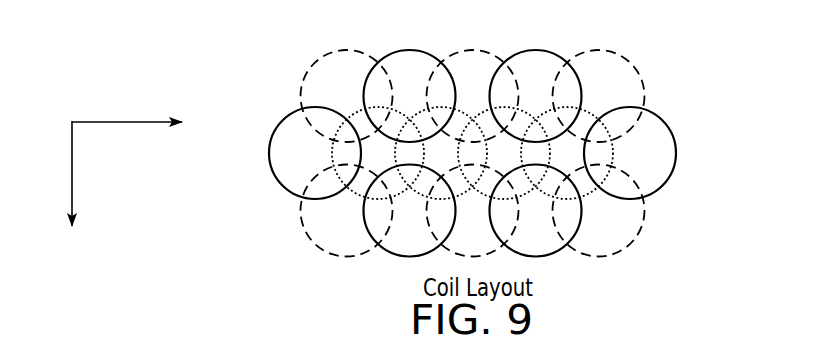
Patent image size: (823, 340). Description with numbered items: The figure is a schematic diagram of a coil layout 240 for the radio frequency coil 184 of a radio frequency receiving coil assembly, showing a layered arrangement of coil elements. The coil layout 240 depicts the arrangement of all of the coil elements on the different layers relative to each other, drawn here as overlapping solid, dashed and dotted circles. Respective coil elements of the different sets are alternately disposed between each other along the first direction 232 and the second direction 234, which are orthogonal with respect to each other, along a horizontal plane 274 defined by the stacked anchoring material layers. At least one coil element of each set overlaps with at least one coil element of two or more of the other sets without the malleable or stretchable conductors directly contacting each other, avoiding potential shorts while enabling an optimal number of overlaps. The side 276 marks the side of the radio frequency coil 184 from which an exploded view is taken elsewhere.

The first direction 232 is at (125, 120).
The second direction 234 is at (71, 170).
The horizontal plane 274 is at (261, 177).
The side 276 is at (261, 215).
The coil layout 240 is at (552, 30).
The radio frequency coil 184 is at (660, 32).